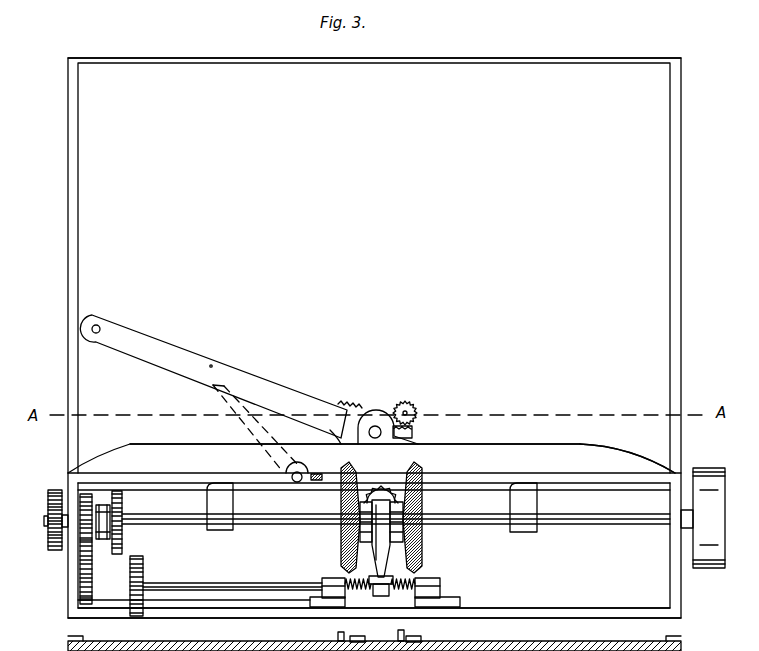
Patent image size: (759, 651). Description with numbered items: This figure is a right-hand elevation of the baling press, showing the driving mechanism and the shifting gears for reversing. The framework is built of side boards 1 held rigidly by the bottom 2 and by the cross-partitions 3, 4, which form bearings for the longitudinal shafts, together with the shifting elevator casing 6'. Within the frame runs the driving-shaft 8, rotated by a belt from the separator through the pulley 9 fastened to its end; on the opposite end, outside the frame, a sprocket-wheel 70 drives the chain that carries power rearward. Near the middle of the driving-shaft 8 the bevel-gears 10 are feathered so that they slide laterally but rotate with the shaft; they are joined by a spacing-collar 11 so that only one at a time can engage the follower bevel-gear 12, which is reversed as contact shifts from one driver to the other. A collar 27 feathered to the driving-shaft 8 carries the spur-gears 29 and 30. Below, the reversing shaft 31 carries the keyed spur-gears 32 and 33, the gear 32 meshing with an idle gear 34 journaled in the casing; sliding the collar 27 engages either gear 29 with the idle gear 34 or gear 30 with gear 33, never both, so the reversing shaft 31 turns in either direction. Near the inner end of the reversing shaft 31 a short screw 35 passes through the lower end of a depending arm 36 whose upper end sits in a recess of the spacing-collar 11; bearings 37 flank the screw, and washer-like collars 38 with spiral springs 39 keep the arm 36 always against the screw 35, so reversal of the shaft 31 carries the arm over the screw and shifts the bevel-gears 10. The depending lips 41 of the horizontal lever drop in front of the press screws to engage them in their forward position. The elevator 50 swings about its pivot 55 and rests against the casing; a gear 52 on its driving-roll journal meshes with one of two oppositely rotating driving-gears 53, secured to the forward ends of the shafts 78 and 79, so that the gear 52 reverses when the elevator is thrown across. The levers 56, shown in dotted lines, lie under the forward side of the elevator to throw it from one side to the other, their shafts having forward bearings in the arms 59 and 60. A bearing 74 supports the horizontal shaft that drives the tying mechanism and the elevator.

The side boards 1 is at (670, 568).
The bottom 2 is at (601, 610).
The cross-partition 3 is at (374, 587).
The cross-partition 4 is at (516, 449).
The shifting elevator casing 6' is at (374, 79).
The driving-shaft 8 is at (582, 525).
The pulley 9 is at (712, 497).
The bevel-gears 10 is at (342, 500).
The spacing-collar 11 is at (396, 526).
The bevel-gear 12 is at (373, 500).
The collar 27 is at (123, 510).
The spur-gear 29 is at (88, 495).
The spur-gear 30 is at (118, 493).
The reversing shaft 31 is at (218, 585).
The spur-gear 32 is at (82, 595).
The spur-gear 33 is at (143, 567).
The idle gear 34 is at (82, 558).
The short screw 35 is at (372, 582).
The depending arm 36 is at (383, 552).
The bearings 37 is at (325, 578).
The washer-like collars 38 is at (391, 580).
The spiral springs 39 is at (348, 577).
The depending lips 41 is at (226, 511).
The elevator 50 is at (140, 343).
The gear 52 is at (405, 435).
The driving-gears 53 is at (350, 402).
The pivot 55 is at (377, 426).
The levers 56 is at (238, 417).
The arm 59 is at (563, 479).
The arm 60 is at (212, 469).
The sprocket-wheel 70 is at (48, 507).
The bearing 74 is at (403, 626).
The forwardly-extending shaft 78 is at (340, 640).
The forwardly-extending shaft 79 is at (408, 413).